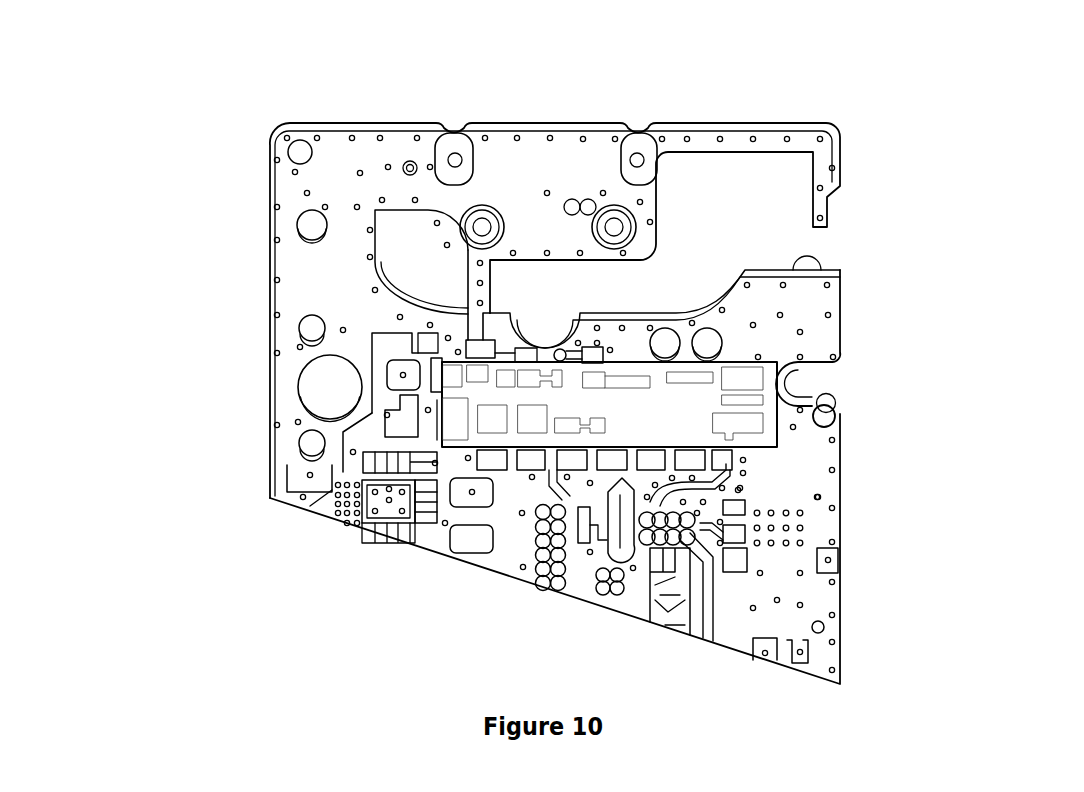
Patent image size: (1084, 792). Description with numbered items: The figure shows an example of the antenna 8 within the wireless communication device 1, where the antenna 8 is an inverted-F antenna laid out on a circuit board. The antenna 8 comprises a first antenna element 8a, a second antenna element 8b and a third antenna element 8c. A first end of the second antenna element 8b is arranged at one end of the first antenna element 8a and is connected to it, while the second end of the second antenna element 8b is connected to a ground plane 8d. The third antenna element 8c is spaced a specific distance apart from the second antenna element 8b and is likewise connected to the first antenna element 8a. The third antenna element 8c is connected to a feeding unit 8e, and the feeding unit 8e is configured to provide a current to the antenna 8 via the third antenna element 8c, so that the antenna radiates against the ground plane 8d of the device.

The wireless communication device 1 is at (145, 127).
The antenna 8 is at (874, 100).
The first antenna element 8a is at (561, 112).
The second antenna element 8b is at (306, 272).
The third antenna element 8c is at (458, 275).
The ground plane 8d is at (420, 420).
The feeding unit 8e is at (457, 331).